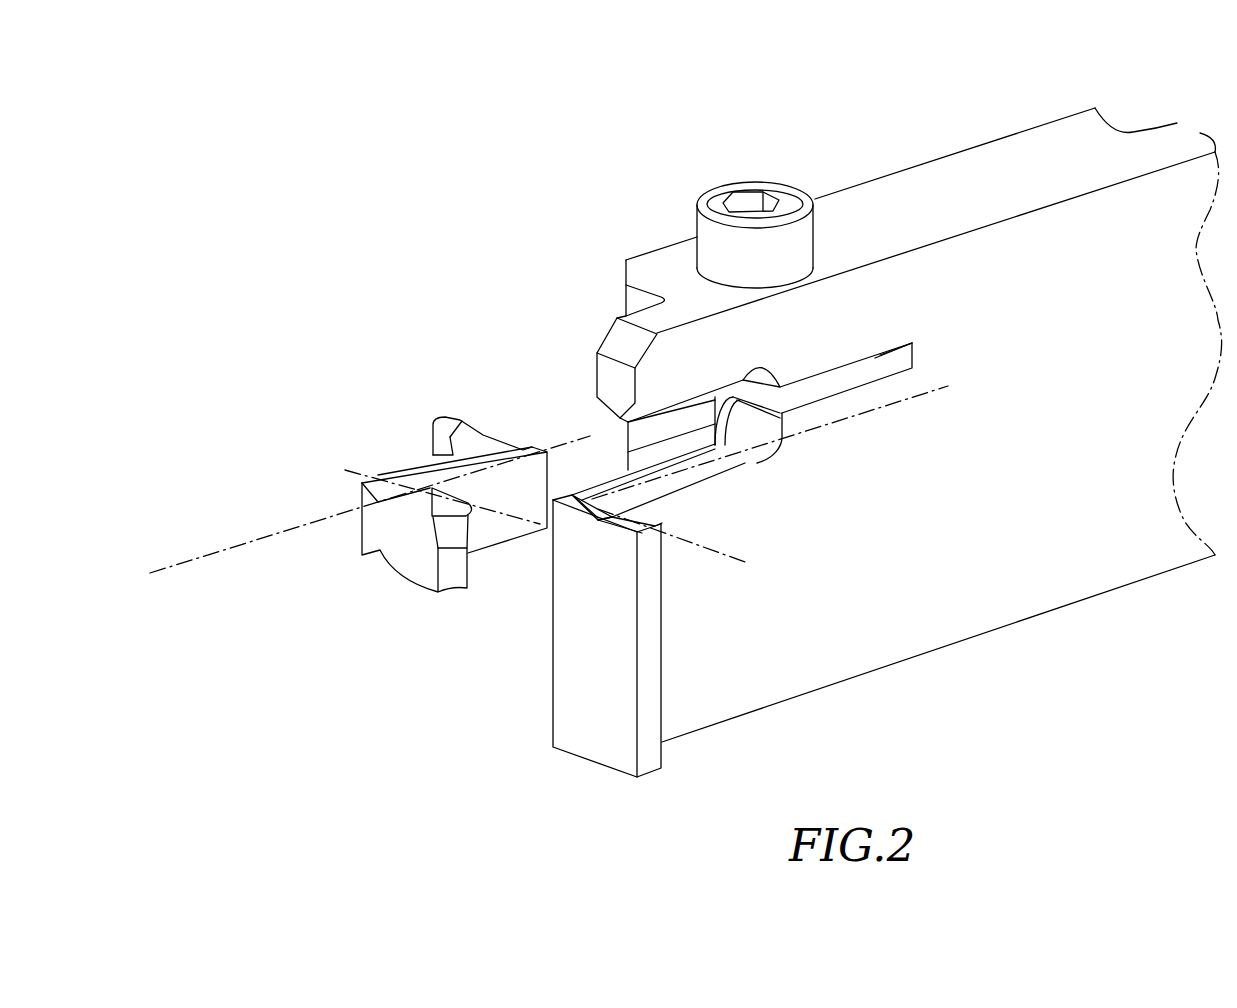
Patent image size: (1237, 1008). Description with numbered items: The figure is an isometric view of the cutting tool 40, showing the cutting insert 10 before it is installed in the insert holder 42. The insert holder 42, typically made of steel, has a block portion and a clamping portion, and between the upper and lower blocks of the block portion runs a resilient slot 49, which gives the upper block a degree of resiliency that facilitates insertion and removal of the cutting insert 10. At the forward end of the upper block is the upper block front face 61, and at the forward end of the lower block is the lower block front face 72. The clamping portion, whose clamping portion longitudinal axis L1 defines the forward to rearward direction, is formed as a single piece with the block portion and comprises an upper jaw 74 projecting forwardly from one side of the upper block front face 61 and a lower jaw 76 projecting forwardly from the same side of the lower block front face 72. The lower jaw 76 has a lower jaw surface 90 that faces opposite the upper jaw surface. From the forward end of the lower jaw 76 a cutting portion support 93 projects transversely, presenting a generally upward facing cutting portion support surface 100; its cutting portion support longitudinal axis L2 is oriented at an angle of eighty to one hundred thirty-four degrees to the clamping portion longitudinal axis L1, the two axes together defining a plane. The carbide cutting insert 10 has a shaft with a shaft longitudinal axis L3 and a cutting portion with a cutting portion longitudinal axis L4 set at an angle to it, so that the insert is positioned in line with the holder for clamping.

The cutting insert 10 is at (417, 594).
The cutting tool 40 is at (995, 648).
The insert holder 42 is at (758, 162).
The resilient slot 49 is at (921, 424).
The upper block front face 61 is at (628, 308).
The lower block front face 72 is at (577, 480).
The upper jaw 74 is at (590, 379).
The lower jaw 76 is at (590, 433).
The lower jaw surface 90 is at (596, 482).
The cutting portion support 93 is at (588, 643).
The cutting portion support surface 100 is at (630, 513).
The clamping portion longitudinal axis L1 is at (827, 428).
The cutting portion support longitudinal axis L2 is at (725, 552).
The shaft longitudinal axis L3 is at (217, 553).
The cutting portion longitudinal axis L4 is at (360, 477).